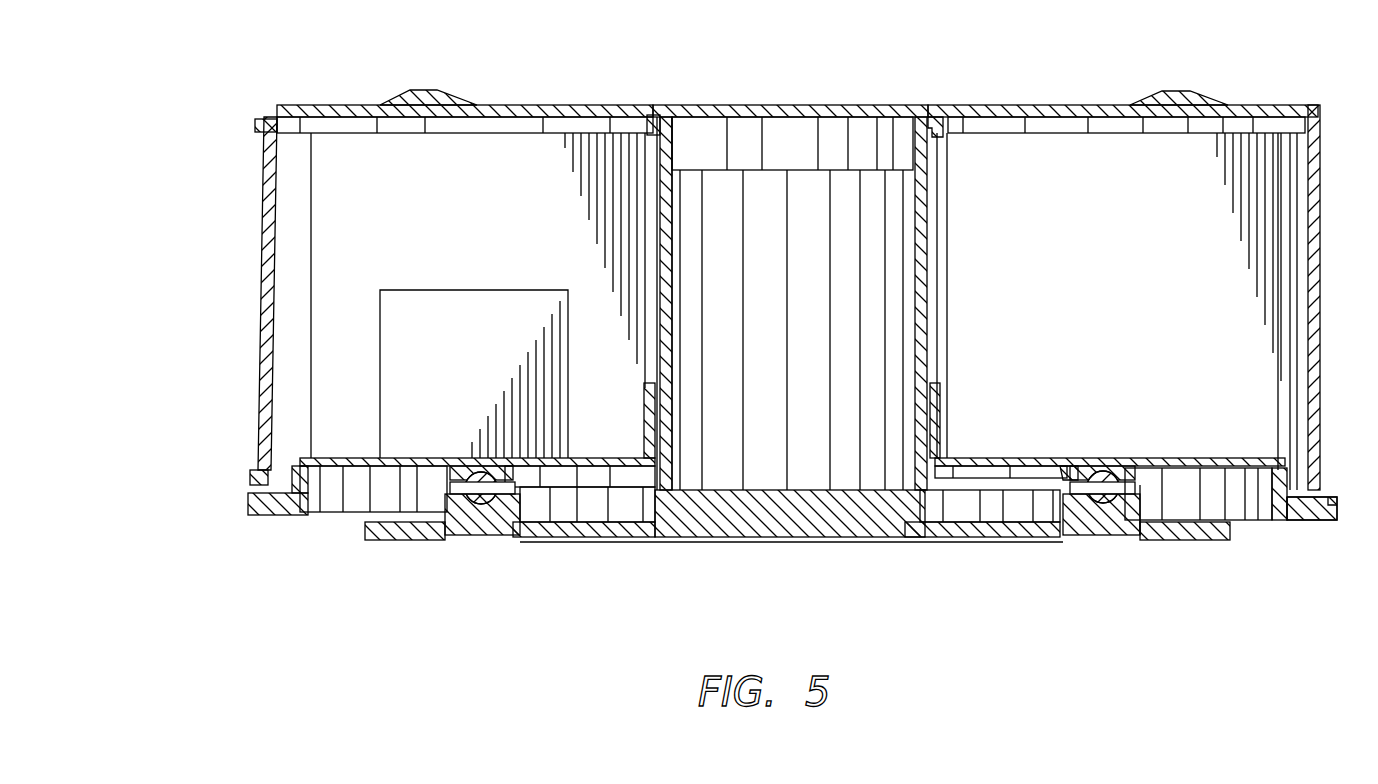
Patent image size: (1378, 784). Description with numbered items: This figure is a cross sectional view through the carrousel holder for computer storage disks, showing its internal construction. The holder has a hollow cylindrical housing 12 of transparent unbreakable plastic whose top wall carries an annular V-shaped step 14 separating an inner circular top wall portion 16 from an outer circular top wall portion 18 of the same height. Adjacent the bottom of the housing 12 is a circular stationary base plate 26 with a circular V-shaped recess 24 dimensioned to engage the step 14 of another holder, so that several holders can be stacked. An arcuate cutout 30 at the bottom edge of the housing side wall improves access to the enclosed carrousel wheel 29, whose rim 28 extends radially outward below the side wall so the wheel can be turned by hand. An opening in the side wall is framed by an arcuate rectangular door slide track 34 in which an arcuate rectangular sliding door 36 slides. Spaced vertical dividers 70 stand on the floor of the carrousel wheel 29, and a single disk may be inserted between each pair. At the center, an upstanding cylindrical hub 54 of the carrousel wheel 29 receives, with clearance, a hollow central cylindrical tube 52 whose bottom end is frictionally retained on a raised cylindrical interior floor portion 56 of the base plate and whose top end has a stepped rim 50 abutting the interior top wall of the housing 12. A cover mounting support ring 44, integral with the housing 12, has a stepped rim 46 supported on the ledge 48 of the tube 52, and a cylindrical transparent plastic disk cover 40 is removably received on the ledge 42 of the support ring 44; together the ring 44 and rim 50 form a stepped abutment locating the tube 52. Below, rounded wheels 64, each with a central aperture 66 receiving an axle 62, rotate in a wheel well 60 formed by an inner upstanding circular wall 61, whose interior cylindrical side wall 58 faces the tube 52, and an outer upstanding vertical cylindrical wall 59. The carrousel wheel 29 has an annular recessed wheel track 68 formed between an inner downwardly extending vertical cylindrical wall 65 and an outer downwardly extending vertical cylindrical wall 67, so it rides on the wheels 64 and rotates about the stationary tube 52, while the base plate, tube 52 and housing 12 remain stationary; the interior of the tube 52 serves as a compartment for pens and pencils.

The hollow cylindrical housing 12 is at (1318, 284).
The annular V-shaped step 14 is at (418, 92).
The inner circular top wall portion 16 is at (1032, 105).
The outer circular top wall portion 18 is at (1258, 105).
The circular V-shaped recess 24 is at (392, 532).
The circular stationary base plate 26 is at (470, 530).
The rim 28 is at (250, 502).
The carrousel wheel 29 is at (1245, 470).
The arcuate cutout 30 is at (1288, 476).
The arcuate rectangular door slide track 34 is at (262, 122).
The arcuate rectangular sliding door 36 is at (264, 227).
The cylindrical transparent plastic disk cover 40 is at (805, 105).
The ledge 42 is at (923, 116).
The cover mounting support ring 44 is at (681, 168).
The stepped rim 46 is at (667, 117).
The ledge 48 is at (939, 114).
The stepped rim 50 is at (654, 114).
The hollow central cylindrical tube 52 is at (674, 343).
The upstanding cylindrical hub 54 is at (647, 410).
The raised cylindrical interior floor portion 56 is at (797, 525).
The interior cylindrical side wall 58 is at (594, 512).
The outer upstanding vertical cylindrical wall 59 is at (1137, 494).
The wheel well 60 is at (1093, 522).
The inner upstanding circular wall 61 is at (1060, 508).
The axle 62 is at (500, 520).
The rounded wheel 64 is at (1108, 525).
The inner downwardly extending vertical cylindrical wall 65 is at (1063, 476).
The central aperture 66 is at (1115, 518).
The outer downwardly extending vertical cylindrical wall 67 is at (1108, 468).
The annular recessed wheel track 68 is at (466, 462).
The vertical dividers 70 is at (410, 290).